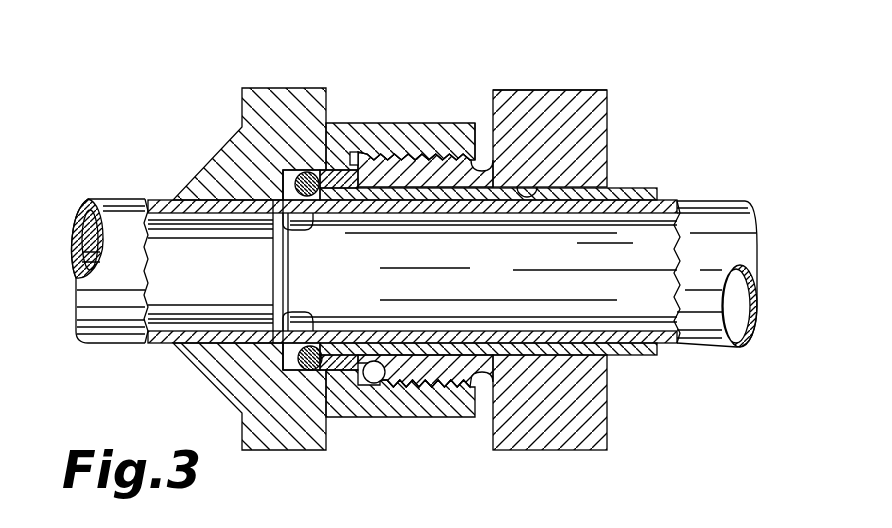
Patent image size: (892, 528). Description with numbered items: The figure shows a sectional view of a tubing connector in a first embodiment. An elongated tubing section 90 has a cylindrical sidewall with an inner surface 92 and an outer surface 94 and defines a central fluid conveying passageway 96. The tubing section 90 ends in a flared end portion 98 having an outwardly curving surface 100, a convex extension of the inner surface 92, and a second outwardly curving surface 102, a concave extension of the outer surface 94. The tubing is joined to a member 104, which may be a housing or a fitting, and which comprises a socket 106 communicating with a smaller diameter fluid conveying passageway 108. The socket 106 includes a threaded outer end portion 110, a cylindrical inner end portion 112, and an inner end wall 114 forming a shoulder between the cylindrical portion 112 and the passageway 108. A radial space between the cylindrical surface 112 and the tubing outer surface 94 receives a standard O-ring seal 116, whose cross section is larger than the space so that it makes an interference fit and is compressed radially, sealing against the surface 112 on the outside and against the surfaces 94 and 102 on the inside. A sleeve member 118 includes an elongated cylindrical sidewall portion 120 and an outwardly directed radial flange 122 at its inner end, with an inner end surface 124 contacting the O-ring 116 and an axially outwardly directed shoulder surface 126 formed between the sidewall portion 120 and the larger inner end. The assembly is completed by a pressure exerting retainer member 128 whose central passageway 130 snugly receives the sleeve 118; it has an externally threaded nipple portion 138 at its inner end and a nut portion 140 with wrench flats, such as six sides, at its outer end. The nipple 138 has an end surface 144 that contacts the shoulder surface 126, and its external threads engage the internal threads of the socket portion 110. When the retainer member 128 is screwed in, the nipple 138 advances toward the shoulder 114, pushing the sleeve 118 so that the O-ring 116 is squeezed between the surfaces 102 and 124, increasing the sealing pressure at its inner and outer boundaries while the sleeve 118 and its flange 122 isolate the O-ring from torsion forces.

The tubing section 90 is at (670, 348).
The inner surface 92 is at (648, 213).
The outer surface 94 is at (668, 200).
The central fluid conveying passageway 96 is at (662, 312).
The flared end portion 98 is at (285, 213).
The outwardly curving surface 100 is at (290, 205).
The second outwardly curving surface 102 is at (308, 200).
The member 104 is at (480, 165).
The socket 106 is at (368, 150).
The fluid conveying passageway 108 is at (160, 238).
The threaded outer end portion 110 is at (462, 152).
The cylindrical inner end portion 112 is at (338, 165).
The inner end wall 114 is at (283, 301).
The O-ring seal 116 is at (310, 370).
The sleeve member 118 is at (615, 362).
The elongated cylindrical sidewall portion 120 is at (638, 355).
The outwardly directed radial flange 122 is at (354, 372).
The inner end surface 124 is at (313, 370).
The shoulder surface 126 is at (373, 384).
The pressure exerting retainer member 128 is at (583, 90).
The central passageway 130 is at (536, 183).
The externally threaded nipple portion 138 is at (393, 160).
The nut portion 140 is at (512, 90).
The end surface 144 is at (353, 158).